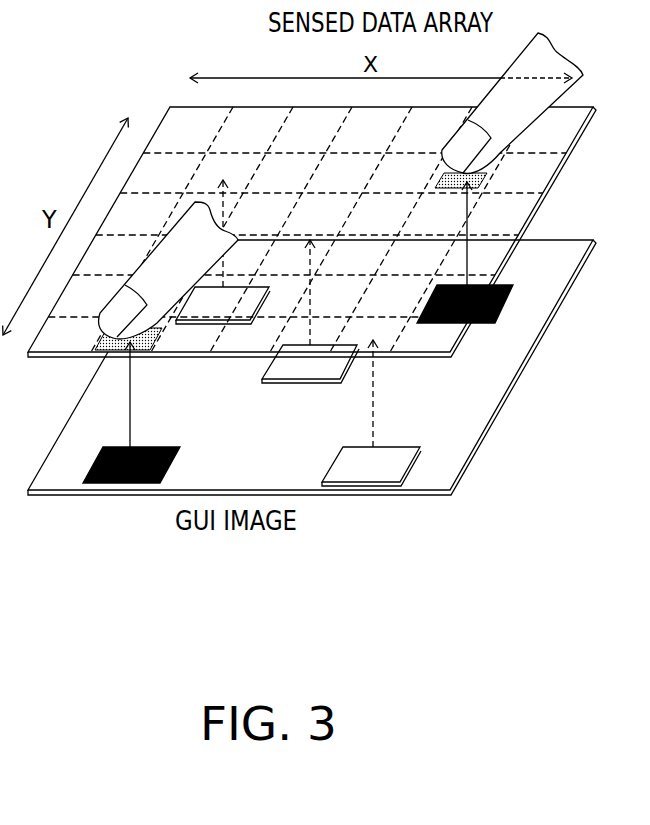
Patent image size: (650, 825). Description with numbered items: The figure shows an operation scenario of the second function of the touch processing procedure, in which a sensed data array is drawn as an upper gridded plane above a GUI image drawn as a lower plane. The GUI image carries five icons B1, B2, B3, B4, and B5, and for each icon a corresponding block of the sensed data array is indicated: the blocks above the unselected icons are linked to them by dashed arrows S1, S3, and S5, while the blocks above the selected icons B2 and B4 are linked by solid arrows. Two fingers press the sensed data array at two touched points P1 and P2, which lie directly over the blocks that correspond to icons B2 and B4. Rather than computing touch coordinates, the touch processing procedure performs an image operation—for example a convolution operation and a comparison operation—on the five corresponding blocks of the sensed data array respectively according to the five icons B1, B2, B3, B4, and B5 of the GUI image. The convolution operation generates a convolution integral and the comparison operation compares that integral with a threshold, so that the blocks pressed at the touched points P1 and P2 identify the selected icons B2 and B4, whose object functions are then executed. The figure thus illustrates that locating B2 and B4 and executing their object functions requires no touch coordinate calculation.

The icon B1 is at (223, 305).
The icon B2 is at (474, 304).
The icon B3 is at (310, 364).
The icon B4 is at (142, 465).
The icon B5 is at (371, 466).
The touched point P1 is at (448, 218).
The touched point P2 is at (118, 373).
The first sensed signal / mapping S1 is at (225, 219).
The third sensed signal / mapping S3 is at (314, 277).
The fifth sensed signal / mapping S5 is at (374, 379).